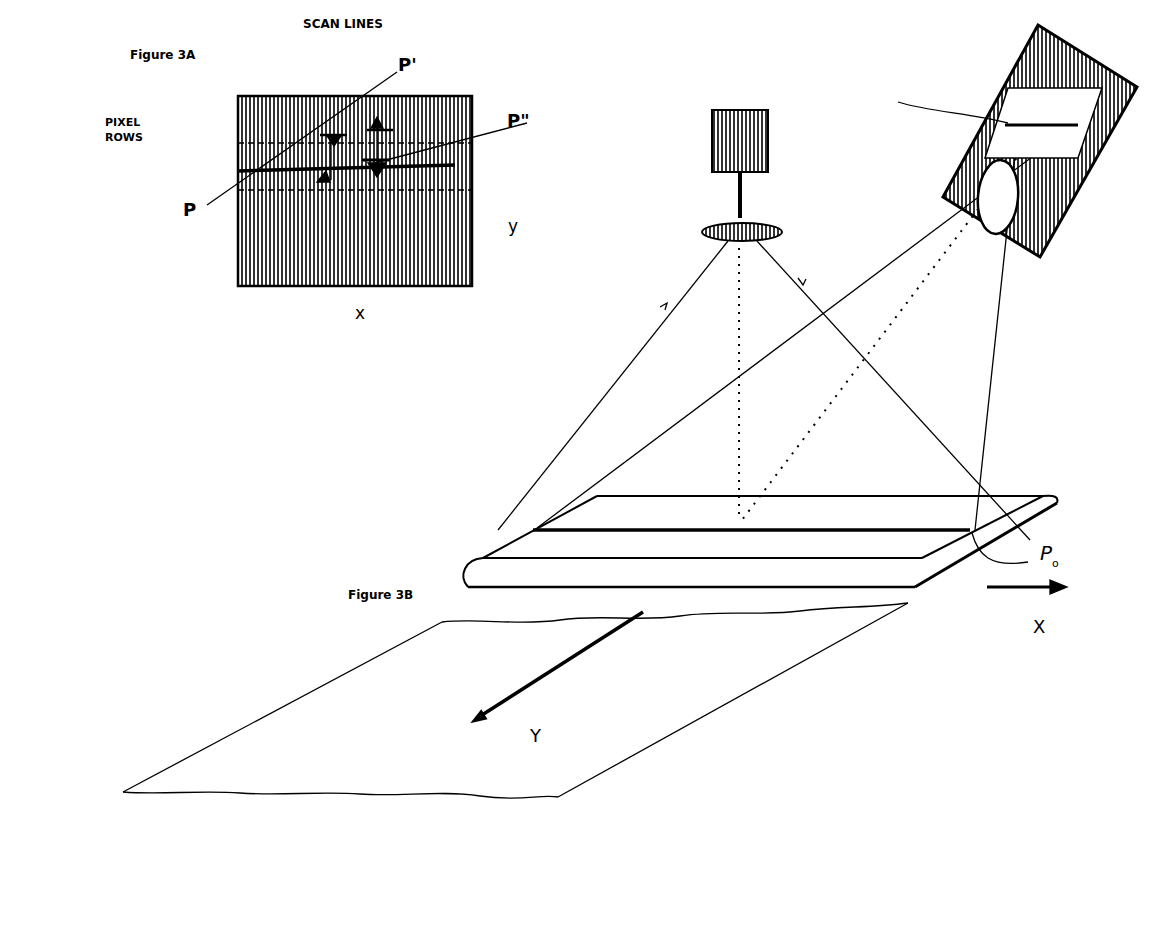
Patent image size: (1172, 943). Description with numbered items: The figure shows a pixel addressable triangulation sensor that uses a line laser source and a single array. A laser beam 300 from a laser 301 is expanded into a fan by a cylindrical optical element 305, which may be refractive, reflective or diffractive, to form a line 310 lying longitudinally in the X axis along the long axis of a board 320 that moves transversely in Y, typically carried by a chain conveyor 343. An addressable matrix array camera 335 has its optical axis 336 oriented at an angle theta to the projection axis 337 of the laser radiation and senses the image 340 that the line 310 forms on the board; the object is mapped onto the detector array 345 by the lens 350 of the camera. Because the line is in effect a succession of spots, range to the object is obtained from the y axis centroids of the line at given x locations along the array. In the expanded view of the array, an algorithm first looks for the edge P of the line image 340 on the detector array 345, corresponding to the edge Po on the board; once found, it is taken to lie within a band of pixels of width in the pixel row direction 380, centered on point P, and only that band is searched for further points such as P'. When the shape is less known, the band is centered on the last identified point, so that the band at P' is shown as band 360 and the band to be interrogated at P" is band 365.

In FIG. 3B, the laser beam 300 is at (743, 203).
In FIG. 3B, the laser 301 is at (741, 110).
In FIG. 3B, the cylindrical optical element 305 is at (780, 235).
In FIG. 3B, the line 310 is at (633, 530).
In FIG. 3B, the board 320 is at (736, 541).
In FIG. 3B, the addressable matrix array camera 335 is at (1011, 141).
In FIG. 3B, the optical axis 336 is at (927, 283).
In FIG. 3B, the projection axis 337 is at (757, 317).
In FIG. 3B, the image 340 is at (1058, 123).
In FIG. 3B, the chain conveyor 343 is at (731, 705).
In FIG. 3B, the detector array 345 is at (1016, 95).
In FIG. 3B, the lens 350 is at (977, 236).
In FIG. 3A, the band 360 is at (330, 157).
In FIG. 3A, the band 365 is at (388, 133).
In FIG. 3A, the band of pixels width in the pixel row direction 380 is at (237, 142).